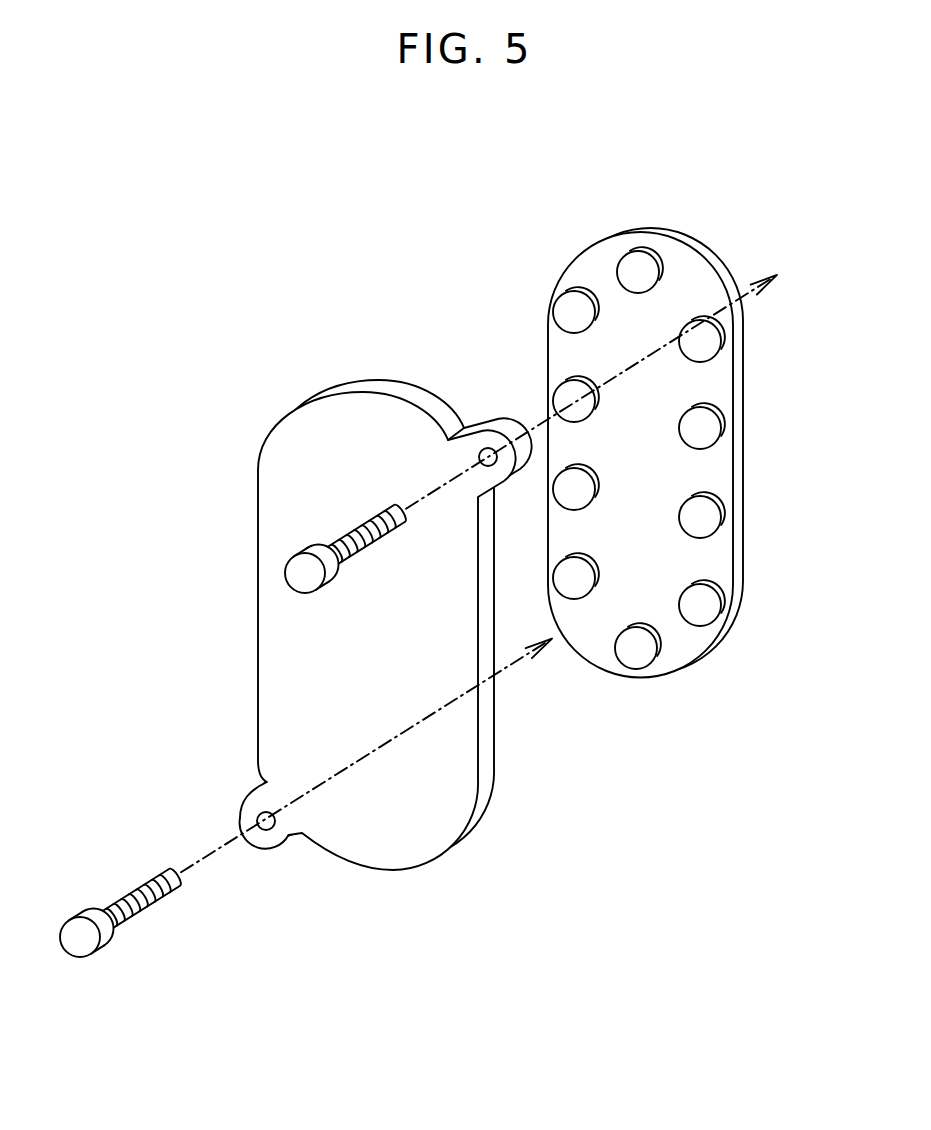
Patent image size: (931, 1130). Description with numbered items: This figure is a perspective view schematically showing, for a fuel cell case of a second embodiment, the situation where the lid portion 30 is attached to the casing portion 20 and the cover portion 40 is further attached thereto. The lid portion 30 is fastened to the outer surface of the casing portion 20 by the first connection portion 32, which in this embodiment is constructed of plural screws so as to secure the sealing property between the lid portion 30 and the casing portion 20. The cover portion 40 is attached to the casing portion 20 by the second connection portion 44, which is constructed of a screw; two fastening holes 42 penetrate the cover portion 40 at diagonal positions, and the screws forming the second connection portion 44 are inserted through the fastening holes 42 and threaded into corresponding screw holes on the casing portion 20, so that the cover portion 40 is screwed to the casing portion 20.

The casing portion 20 is at (770, 444).
The lid portion 30 is at (588, 262).
The first connection portion 32 is at (703, 526).
The cover portion 40 is at (300, 430).
The fastening holes 42 is at (263, 838).
The second connection portion 44 is at (90, 917).